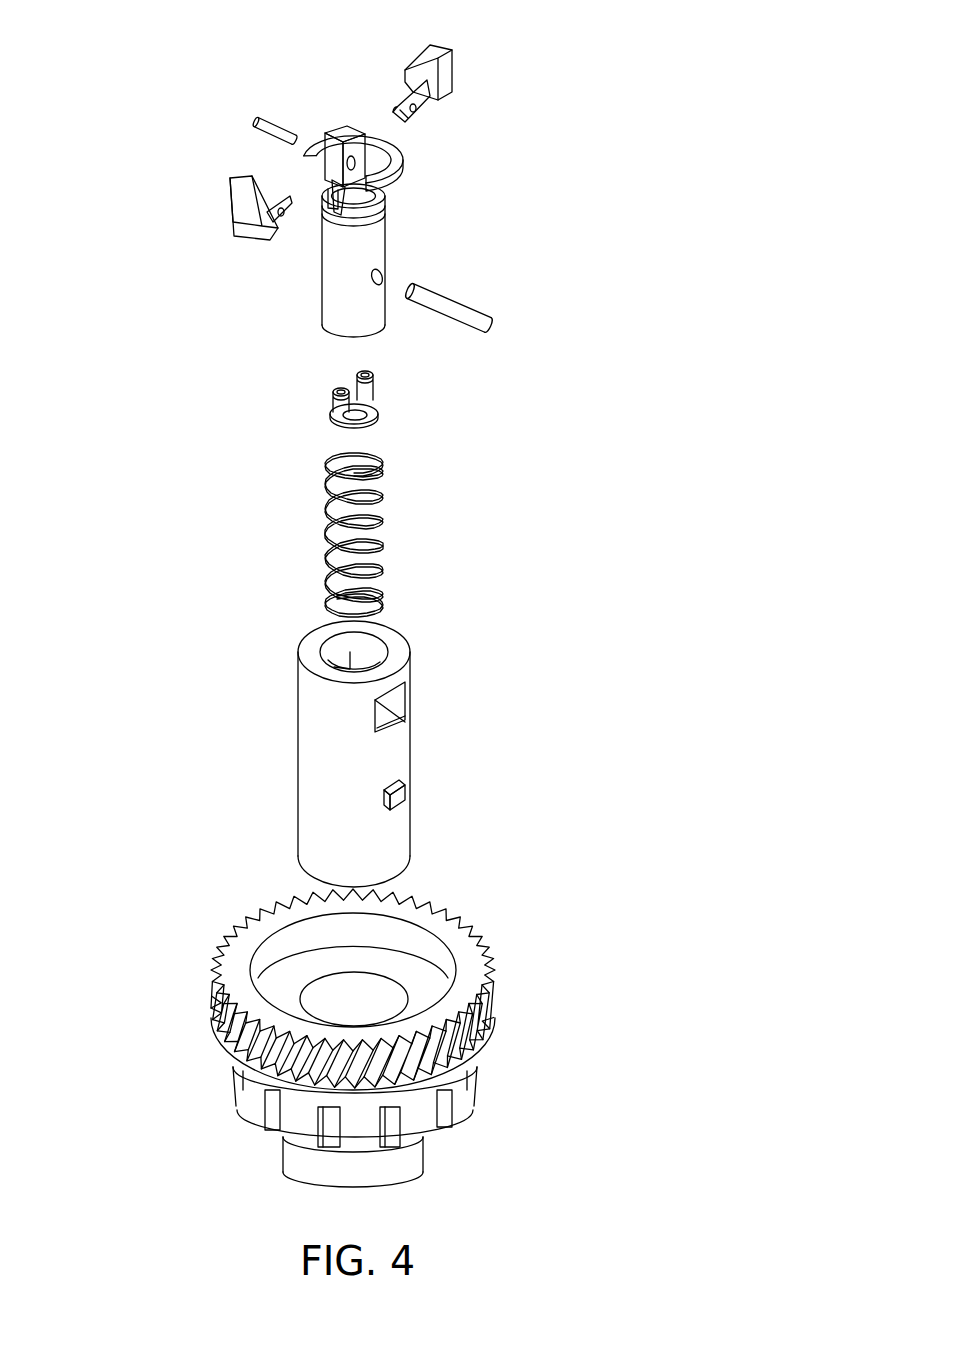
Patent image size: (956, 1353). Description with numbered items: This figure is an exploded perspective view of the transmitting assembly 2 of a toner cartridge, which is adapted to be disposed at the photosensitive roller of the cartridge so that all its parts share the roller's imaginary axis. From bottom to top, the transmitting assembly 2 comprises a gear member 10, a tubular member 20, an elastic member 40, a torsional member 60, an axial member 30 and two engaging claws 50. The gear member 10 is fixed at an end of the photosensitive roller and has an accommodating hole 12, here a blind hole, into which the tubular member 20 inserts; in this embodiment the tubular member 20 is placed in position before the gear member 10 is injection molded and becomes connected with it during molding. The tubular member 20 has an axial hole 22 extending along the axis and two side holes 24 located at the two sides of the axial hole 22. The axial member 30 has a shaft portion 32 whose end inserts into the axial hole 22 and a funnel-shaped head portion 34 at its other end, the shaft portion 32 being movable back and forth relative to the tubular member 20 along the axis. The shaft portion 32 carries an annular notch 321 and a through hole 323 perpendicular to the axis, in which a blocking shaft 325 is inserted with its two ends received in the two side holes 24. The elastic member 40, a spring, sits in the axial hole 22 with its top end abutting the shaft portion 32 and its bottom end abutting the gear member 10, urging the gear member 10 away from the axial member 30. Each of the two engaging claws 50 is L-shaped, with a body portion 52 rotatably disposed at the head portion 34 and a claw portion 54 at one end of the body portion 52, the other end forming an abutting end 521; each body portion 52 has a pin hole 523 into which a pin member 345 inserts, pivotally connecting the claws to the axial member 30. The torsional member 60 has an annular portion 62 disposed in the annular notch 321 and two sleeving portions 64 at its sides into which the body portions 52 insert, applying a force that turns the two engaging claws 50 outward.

The transmitting assembly 2 is at (121, 122).
The gear member 10 is at (393, 1038).
The accommodating hole 12 is at (382, 1003).
The tubular member 20 is at (414, 745).
The axial hole 22 is at (368, 657).
The side holes 24 is at (397, 700).
The axial member 30 is at (388, 202).
The shaft portion 32 is at (358, 262).
The annular notch 321 is at (338, 208).
The through hole 323 is at (382, 277).
The blocking shaft 325 is at (463, 307).
The head portion 34 is at (340, 150).
The pin member 345 is at (266, 118).
The elastic member 40 is at (382, 543).
The engaging claws 50 is at (346, 129).
The body portion 52 is at (425, 117).
The abutting end 521 is at (392, 108).
The pin hole 523 is at (413, 115).
The claw portion 54 is at (440, 73).
The torsional member 60 is at (369, 399).
The annular portion 62 is at (332, 410).
The sleeving portions 64 is at (342, 385).